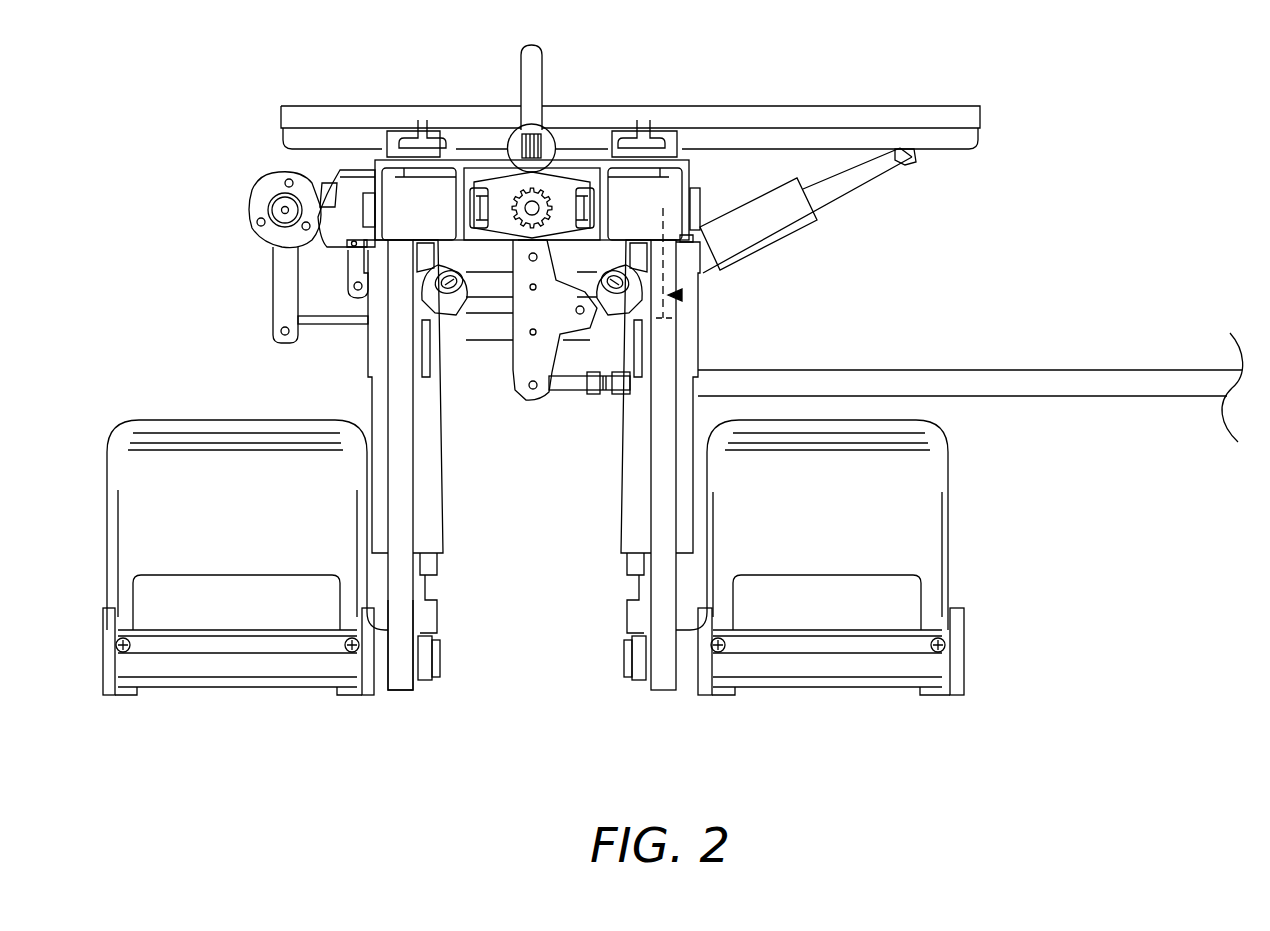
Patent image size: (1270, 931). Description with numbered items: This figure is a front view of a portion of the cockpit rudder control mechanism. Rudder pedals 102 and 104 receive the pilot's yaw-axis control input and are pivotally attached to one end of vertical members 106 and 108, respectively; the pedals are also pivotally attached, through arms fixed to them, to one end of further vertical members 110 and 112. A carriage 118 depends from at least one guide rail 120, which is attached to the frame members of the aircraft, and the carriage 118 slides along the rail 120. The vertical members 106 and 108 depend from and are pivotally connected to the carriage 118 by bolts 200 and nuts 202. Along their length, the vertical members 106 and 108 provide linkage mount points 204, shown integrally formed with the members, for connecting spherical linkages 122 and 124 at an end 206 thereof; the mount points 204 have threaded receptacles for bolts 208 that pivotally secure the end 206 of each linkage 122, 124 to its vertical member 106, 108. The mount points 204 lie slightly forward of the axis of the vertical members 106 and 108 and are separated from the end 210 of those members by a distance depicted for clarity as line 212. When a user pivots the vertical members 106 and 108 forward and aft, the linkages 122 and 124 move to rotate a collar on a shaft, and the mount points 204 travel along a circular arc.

The rudder pedal 102 is at (839, 521).
The rudder pedal 104 is at (275, 521).
The vertical member 106 is at (670, 357).
The vertical member 108 is at (393, 665).
The vertical member 110 is at (632, 495).
The vertical member 112 is at (447, 500).
The carriage 118 is at (463, 168).
The guide rail 120 is at (422, 133).
The spherical linkage 122 is at (623, 252).
The spherical linkage 124 is at (437, 250).
The bolt 200 is at (365, 205).
The nut 202 is at (470, 213).
The linkage mount point 204 is at (453, 275).
The end of linkage 206 is at (427, 322).
The bolt 208 is at (580, 270).
The end of vertical member 210 is at (395, 187).
The distance line 212 is at (682, 295).